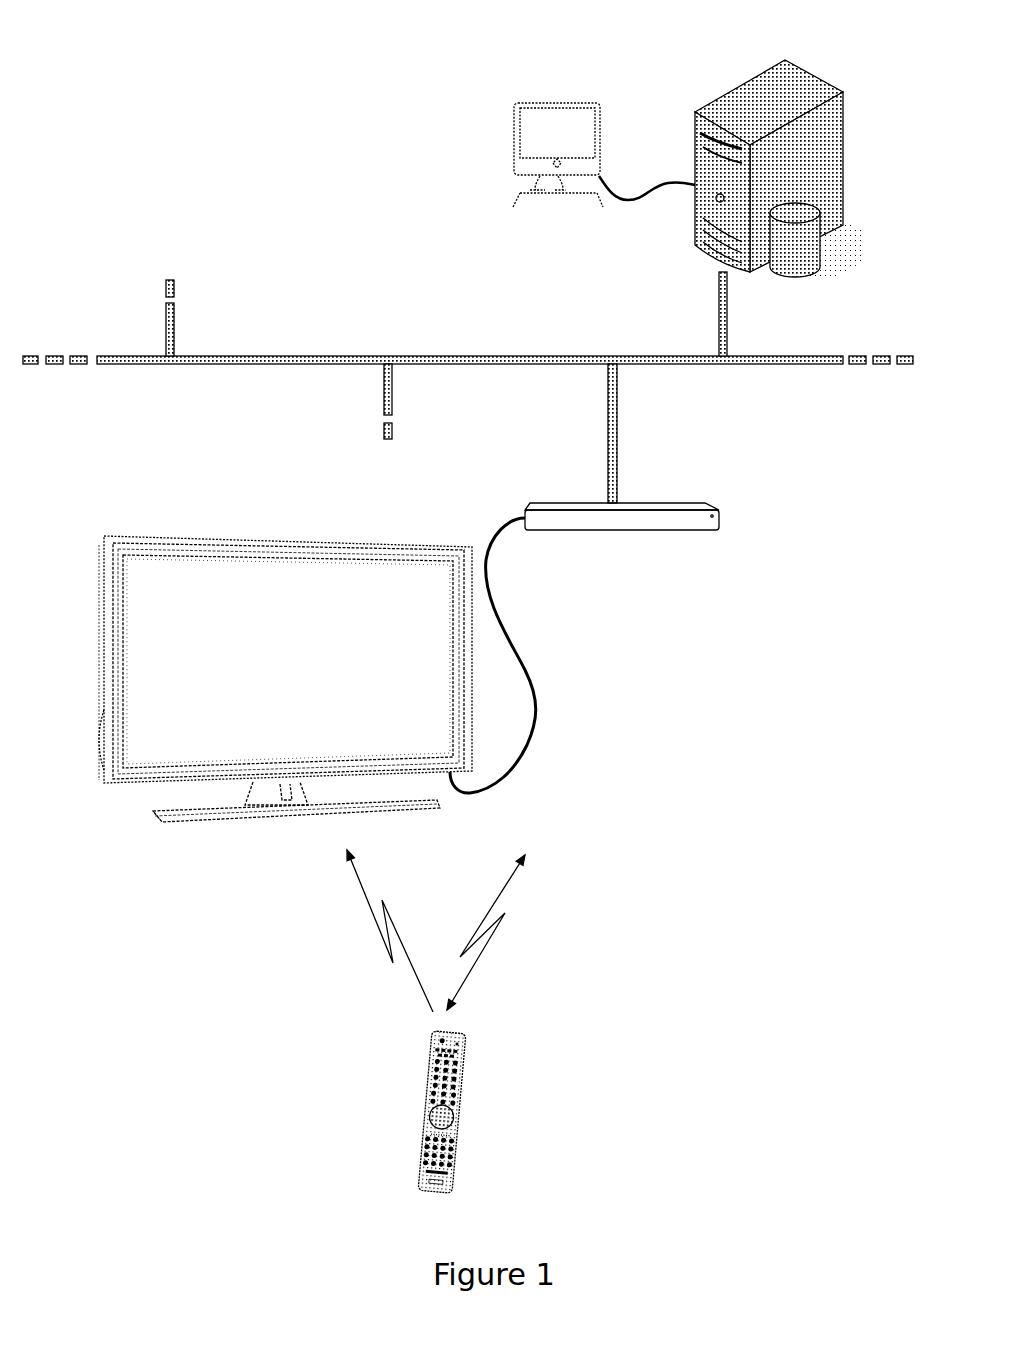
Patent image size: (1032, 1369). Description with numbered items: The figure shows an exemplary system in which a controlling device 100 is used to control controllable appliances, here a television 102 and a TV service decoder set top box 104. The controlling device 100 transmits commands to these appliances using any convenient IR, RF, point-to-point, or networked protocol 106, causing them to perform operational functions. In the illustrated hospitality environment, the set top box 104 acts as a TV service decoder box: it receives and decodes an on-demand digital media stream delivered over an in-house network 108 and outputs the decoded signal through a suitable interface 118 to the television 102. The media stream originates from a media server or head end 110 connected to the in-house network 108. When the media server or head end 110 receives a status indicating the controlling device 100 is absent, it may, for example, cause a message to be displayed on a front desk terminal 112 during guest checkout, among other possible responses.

The controlling device 100 is at (420, 1143).
The television 102 is at (268, 537).
The TV service decoder set top box 104 is at (687, 530).
The protocol 106 is at (485, 955).
The in-house network 108 is at (620, 392).
The media server or head end 110 is at (737, 85).
The front desk terminal 112 is at (559, 105).
The interface 118 is at (537, 725).